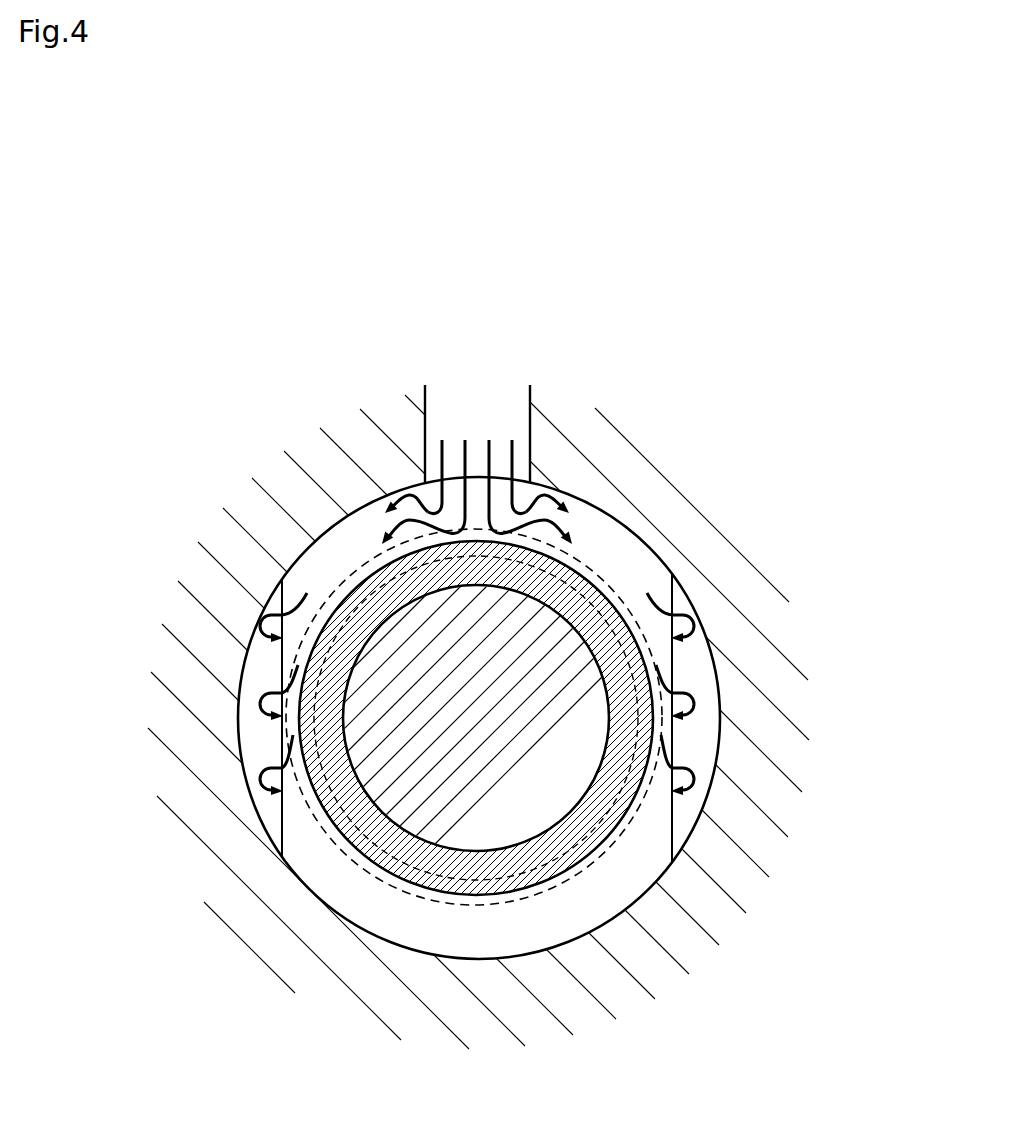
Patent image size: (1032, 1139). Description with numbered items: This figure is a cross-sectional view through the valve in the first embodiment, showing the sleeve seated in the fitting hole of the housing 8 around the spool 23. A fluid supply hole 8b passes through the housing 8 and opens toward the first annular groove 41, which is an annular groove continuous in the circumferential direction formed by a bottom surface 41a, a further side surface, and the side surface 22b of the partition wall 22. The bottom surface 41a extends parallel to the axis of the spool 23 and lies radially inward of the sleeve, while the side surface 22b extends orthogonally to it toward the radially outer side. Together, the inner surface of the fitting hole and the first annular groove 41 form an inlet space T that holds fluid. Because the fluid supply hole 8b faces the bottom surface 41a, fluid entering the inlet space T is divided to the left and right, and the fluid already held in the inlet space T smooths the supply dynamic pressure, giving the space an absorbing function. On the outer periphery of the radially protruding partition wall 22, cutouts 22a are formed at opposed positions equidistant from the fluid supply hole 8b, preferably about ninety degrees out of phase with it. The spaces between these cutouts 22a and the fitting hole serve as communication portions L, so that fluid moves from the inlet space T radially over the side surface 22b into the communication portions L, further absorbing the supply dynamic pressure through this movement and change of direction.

The housing 8 is at (624, 458).
The fluid supply hole 8b is at (530, 430).
The first annular groove 41 is at (575, 515).
The bottom surface 41a is at (403, 553).
The partition wall 22 is at (653, 898).
The cutouts 22a is at (282, 820).
The side surface 22b is at (515, 940).
The spool 23 is at (447, 837).
The inlet space T is at (488, 948).
The communication portions L is at (262, 683).